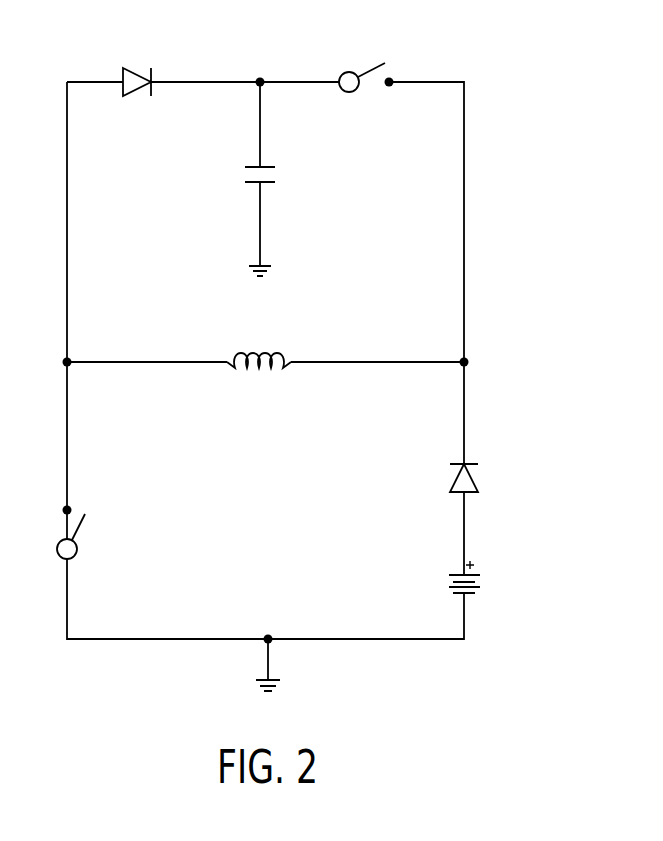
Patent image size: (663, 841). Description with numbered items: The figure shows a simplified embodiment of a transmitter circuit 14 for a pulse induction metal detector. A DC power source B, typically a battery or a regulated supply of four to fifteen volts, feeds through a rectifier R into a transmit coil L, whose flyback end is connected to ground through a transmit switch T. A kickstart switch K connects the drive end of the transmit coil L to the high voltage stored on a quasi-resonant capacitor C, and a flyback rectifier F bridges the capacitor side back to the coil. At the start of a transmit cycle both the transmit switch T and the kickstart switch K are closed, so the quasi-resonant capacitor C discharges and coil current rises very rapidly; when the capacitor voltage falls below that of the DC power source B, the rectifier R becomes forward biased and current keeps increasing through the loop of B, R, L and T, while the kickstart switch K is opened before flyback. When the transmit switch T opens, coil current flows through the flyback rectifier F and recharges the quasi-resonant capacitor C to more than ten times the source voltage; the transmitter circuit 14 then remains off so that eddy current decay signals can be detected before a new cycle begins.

The transmitter circuit 14 is at (503, 115).
The flyback rectifier F is at (137, 64).
The kickstart switch K is at (362, 63).
The quasi-resonant capacitor C is at (272, 173).
The transmit coil L is at (259, 377).
The rectifier R is at (476, 478).
The DC power source B is at (475, 578).
The transmit switch T is at (82, 536).